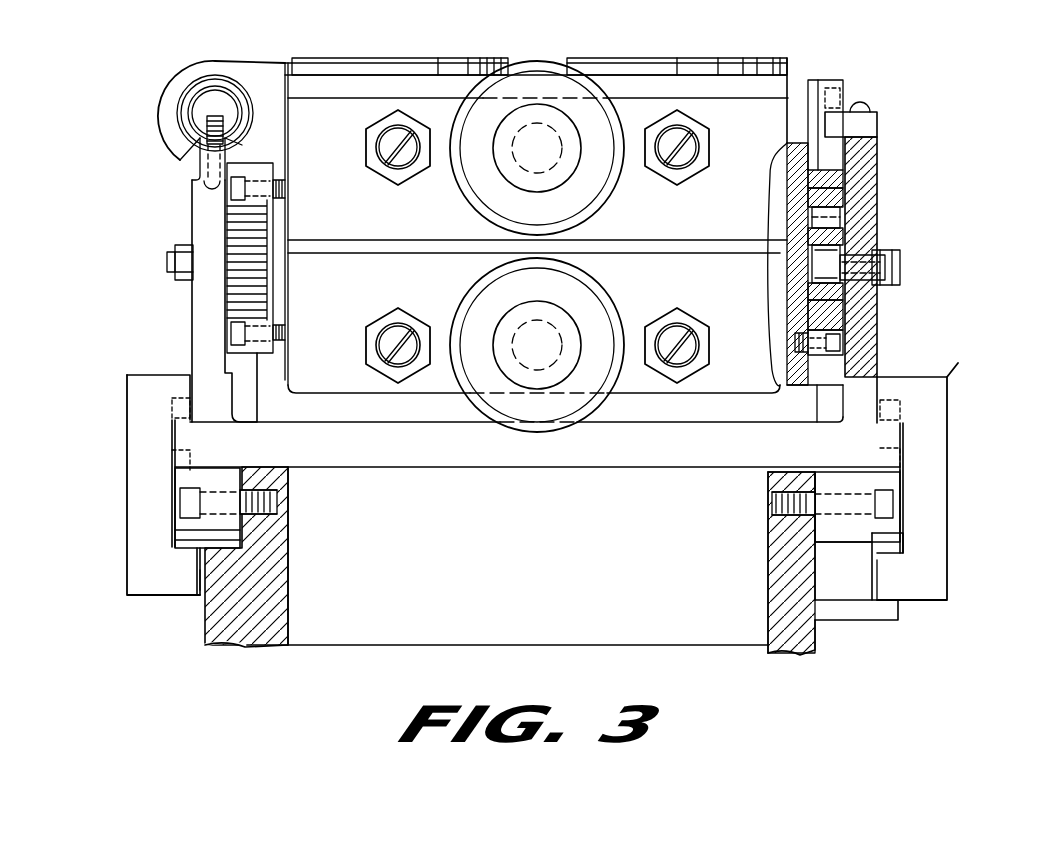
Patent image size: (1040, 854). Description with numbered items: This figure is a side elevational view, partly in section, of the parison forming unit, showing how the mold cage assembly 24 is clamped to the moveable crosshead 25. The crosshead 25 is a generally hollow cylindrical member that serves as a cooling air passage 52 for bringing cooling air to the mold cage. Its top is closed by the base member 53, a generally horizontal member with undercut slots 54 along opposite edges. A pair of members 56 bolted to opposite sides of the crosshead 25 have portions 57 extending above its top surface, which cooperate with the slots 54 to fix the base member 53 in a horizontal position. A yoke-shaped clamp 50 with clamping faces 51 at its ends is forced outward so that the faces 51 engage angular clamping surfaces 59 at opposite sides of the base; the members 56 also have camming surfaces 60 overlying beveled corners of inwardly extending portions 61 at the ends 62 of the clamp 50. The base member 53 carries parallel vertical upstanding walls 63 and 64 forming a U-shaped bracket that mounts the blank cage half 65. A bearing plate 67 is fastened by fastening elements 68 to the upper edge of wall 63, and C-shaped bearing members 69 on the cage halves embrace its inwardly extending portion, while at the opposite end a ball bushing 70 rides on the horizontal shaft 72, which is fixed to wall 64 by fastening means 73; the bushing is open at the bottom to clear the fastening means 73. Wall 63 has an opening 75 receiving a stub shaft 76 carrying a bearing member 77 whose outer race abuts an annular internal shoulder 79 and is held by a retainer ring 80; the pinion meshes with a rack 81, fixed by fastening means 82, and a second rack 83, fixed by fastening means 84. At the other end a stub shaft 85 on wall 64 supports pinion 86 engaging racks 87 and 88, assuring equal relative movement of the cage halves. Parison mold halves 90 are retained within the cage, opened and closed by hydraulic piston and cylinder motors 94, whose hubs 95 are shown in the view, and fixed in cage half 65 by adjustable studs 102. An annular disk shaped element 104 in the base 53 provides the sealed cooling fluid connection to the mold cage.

The mold cage assembly 24 is at (543, 52).
The moveable crosshead 25 is at (256, 636).
The yoke-shaped clamp 50 is at (133, 588).
The clamping faces 51 is at (177, 422).
The cooling air passage 52 is at (525, 580).
The base member 53 is at (636, 452).
The undercut slots 54 is at (183, 440).
The members 56 is at (185, 540).
The portions 57 is at (183, 458).
The angular clamping surfaces 59 is at (167, 398).
The camming surfaces 60 is at (165, 560).
The inwardly extending portions 61 is at (190, 578).
The ends 62 is at (140, 488).
The vertical upstanding wall 63 is at (867, 205).
The vertical upstanding wall 64 is at (205, 280).
The blank cage half 65 is at (782, 85).
The bearing plate 67 is at (862, 127).
The fastening elements 68 is at (867, 103).
The C-shaped bearing members 69 is at (835, 80).
The ball bushing 70 is at (172, 90).
The horizontal shaft 72 is at (205, 108).
The fastening means 73 is at (210, 188).
The opening 75 is at (897, 252).
The stub shaft 76 is at (900, 266).
The bearing member 77 is at (817, 262).
The annular internal shoulder 79 is at (800, 233).
The retainer ring 80 is at (843, 232).
The rack 81 is at (838, 176).
The fastening means 82 is at (843, 193).
The second rack 83 is at (847, 352).
The fastening means 84 is at (833, 335).
The stub shaft 85 is at (172, 260).
The pinion 86 is at (237, 257).
The rack 87 is at (233, 315).
The rack 88 is at (238, 212).
The parison mold halves 90 is at (513, 60).
The hydraulic piston and cylinder motors 94 is at (567, 293).
The roller hub 95 is at (537, 148).
The adjustable studs 102 is at (380, 165).
The annular disk shaped element 104 is at (398, 422).